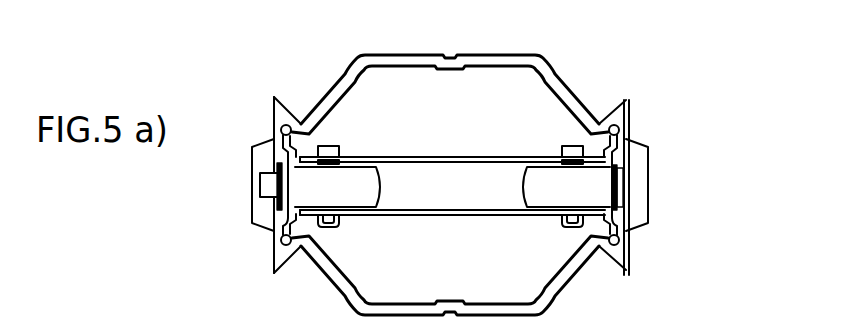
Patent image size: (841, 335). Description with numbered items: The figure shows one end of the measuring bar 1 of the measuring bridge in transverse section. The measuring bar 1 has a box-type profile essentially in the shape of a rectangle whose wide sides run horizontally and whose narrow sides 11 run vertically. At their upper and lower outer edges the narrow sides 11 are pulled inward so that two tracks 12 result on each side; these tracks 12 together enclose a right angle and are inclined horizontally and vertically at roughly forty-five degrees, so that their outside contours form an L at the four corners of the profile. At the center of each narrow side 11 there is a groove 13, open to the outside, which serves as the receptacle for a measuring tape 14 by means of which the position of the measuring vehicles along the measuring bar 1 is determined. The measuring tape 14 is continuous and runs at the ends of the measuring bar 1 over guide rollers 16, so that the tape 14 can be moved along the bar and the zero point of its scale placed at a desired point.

The measuring bar 1 is at (547, 60).
The narrow sides 11 is at (619, 142).
The tracks 12 is at (581, 102).
The groove 13 is at (625, 177).
The measuring tape 14 is at (525, 182).
The guide rollers 16 is at (369, 201).